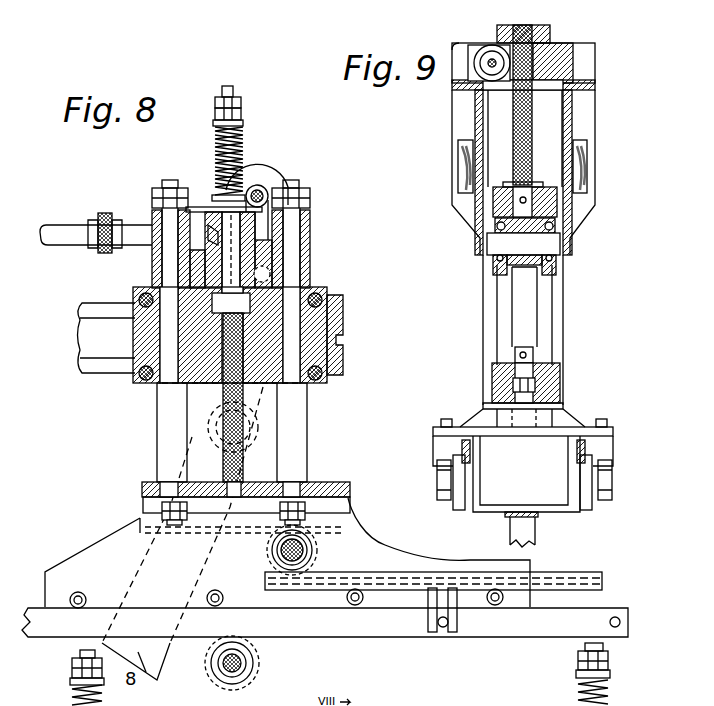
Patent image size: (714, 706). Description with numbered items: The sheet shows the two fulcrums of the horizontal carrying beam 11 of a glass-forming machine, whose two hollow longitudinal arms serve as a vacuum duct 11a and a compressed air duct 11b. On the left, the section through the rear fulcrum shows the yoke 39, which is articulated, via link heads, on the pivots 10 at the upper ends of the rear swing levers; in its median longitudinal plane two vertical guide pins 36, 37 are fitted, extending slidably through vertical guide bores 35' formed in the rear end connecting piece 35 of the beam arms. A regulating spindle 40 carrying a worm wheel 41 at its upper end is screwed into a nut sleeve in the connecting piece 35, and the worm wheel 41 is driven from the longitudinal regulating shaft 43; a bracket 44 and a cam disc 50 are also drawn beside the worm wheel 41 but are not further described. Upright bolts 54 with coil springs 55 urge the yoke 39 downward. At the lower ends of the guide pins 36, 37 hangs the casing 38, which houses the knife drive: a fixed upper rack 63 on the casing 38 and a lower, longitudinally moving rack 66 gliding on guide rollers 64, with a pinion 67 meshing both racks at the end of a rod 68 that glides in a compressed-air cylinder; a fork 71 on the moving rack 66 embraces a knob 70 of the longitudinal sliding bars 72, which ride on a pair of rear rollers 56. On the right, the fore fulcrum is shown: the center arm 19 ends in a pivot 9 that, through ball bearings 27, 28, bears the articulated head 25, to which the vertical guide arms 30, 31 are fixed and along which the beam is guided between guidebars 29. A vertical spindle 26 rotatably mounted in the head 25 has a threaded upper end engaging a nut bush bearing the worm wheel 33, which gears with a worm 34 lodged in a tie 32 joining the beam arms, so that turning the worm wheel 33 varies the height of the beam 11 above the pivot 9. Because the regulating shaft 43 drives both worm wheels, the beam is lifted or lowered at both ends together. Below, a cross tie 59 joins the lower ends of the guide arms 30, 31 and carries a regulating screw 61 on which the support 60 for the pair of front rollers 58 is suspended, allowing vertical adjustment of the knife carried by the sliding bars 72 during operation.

In FIG. 9, the pivot 9 is at (548, 243).
In FIG. 8, the pivot 10 is at (243, 427).
In FIG. 8, the carrying beam 11 is at (98, 342).
In FIG. 9, the carrying beam 11 is at (458, 146).
In FIG. 9, the vacuum duct 11a is at (467, 174).
In FIG. 9, the compressed air duct 11b is at (580, 163).
In FIG. 9, the center arm 19 is at (523, 312).
In FIG. 9, the articulated cross piece or head 25 is at (547, 203).
In FIG. 9, the vertical spindle 26 is at (525, 121).
In FIG. 9, the ball bearing 27 is at (495, 264).
In FIG. 9, the ball bearing 28 is at (552, 258).
In FIG. 9, the guidebar 29 is at (558, 132).
In FIG. 9, the vertical guide arm 30 is at (557, 348).
In FIG. 9, the vertical guide arm 31 is at (488, 325).
In FIG. 9, the tie 32 is at (566, 45).
In FIG. 9, the worm wheel 33 is at (543, 62).
In FIG. 9, the worm 34 is at (487, 53).
In FIG. 8, the rear end connecting piece 35 is at (251, 335).
In FIG. 8, the vertical guide bore 35' is at (244, 348).
In FIG. 8, the vertical guide pin 36 is at (168, 406).
In FIG. 8, the vertical guide pin 37 is at (292, 423).
In FIG. 8, the casing 38 is at (337, 488).
In FIG. 8, the yoke 39 is at (308, 220).
In FIG. 8, the regulating spindle 40 is at (237, 387).
In FIG. 8, the worm wheel 41 is at (206, 210).
In FIG. 8, the longitudinal regulating shaft 43 is at (58, 234).
In FIG. 8, the bracket 44 is at (284, 264).
In FIG. 8, the cam disc 50 is at (270, 175).
In FIG. 8, the upright bolt 54 is at (235, 145).
In FIG. 8, the spring 55 is at (235, 163).
In FIG. 8, the rear roller 56 is at (211, 660).
In FIG. 9, the front roller 58 is at (463, 506).
In FIG. 9, the cross tie 59 is at (547, 388).
In FIG. 9, the support 60 is at (608, 452).
In FIG. 9, the regulating screw 61 is at (533, 357).
In FIG. 8, the upper rack 63 is at (344, 515).
In FIG. 8, the guide roller 64 is at (218, 603).
In FIG. 8, the lower moving rack 66 is at (427, 575).
In FIG. 8, the pinion 67 is at (263, 551).
In FIG. 8, the rod 68 is at (330, 548).
In FIG. 8, the knob 70 is at (443, 630).
In FIG. 8, the fork 71 is at (457, 628).
In FIG. 8, the longitudinal sliding bar 72 is at (33, 630).
In FIG. 9, the longitudinal sliding bar 72 is at (575, 452).